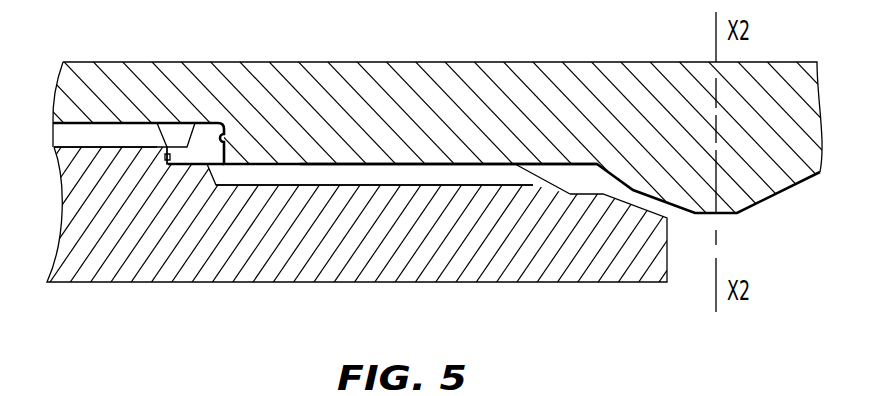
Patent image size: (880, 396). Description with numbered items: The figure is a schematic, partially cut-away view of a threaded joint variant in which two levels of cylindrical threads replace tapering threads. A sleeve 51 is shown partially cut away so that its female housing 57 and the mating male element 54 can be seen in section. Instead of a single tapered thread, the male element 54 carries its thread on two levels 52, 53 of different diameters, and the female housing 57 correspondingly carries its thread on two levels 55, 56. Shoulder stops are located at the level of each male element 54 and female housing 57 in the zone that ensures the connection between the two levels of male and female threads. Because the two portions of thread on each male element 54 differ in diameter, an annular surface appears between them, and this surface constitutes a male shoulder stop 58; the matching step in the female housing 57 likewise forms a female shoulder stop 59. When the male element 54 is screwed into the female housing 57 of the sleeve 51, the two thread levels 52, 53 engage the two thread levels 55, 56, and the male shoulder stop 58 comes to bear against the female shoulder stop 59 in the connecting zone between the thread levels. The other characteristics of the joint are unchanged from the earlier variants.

The sleeve 51 is at (357, 82).
The first male thread level 52 is at (517, 177).
The second male thread level 53 is at (120, 130).
The male element 54 is at (243, 283).
The first female thread level 55 is at (543, 166).
The second female thread level 56 is at (180, 133).
The female housing 57 is at (440, 167).
The male shoulder stop 58 is at (170, 159).
The female shoulder stop 59 is at (226, 141).